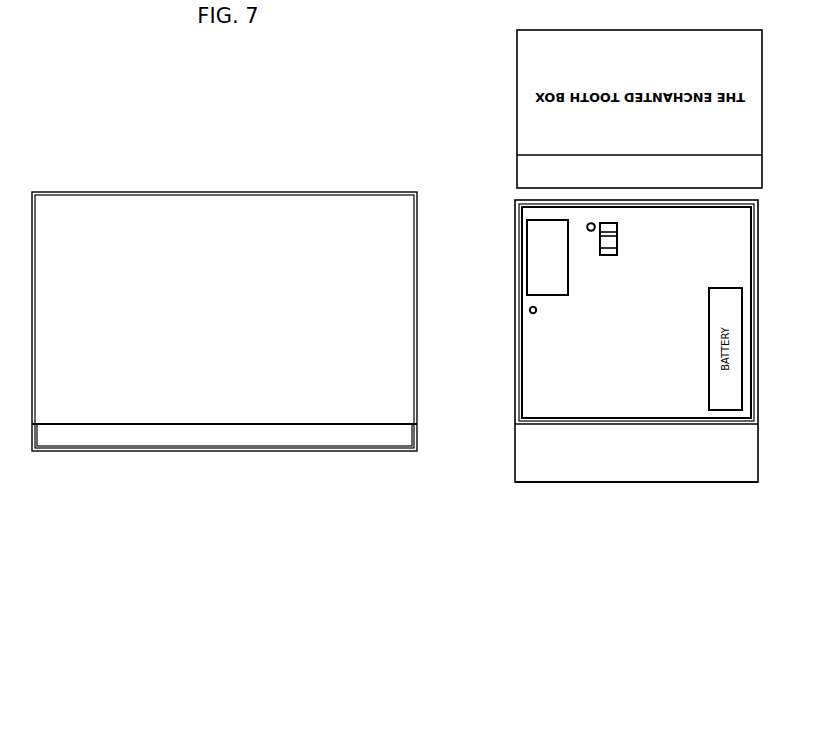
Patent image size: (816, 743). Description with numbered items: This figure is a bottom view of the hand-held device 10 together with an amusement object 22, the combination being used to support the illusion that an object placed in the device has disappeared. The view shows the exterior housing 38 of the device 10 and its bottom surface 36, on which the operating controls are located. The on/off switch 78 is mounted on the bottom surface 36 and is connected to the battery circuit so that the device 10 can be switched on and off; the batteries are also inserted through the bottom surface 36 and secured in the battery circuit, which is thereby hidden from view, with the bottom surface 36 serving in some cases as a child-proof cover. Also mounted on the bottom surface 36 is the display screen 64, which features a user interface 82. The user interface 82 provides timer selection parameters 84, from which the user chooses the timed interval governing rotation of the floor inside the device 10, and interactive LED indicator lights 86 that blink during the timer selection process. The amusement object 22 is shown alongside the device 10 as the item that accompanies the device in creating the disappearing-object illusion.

The device 10 is at (525, 495).
The amusement object 22 is at (168, 242).
The bottom surface 36 is at (553, 391).
The exterior housing 38 is at (630, 453).
The display screen 64 is at (528, 233).
The on/off switch 78 is at (607, 256).
The user interface 82 is at (530, 265).
The timer selection parameters 84 is at (546, 292).
The interactive LED indicator lights 86 is at (531, 313).